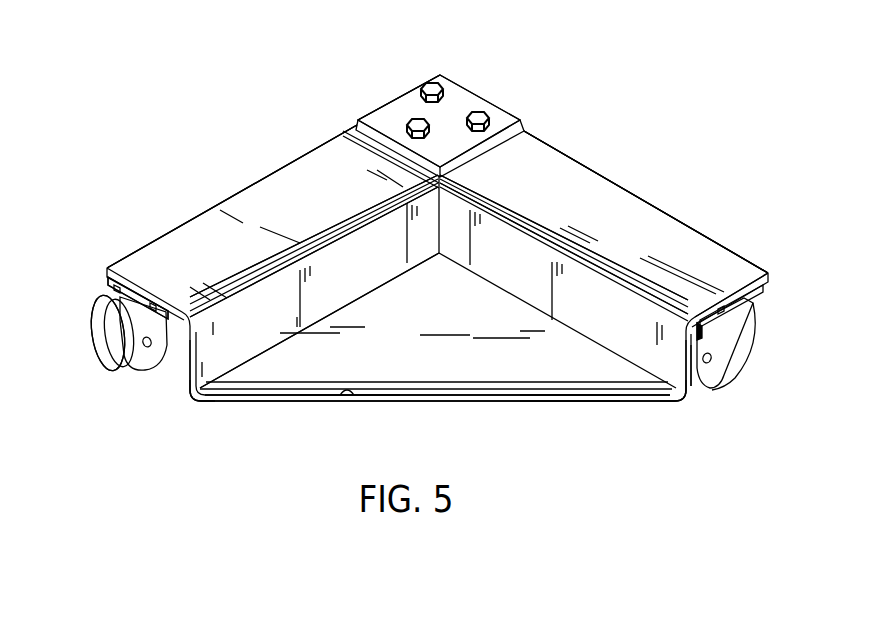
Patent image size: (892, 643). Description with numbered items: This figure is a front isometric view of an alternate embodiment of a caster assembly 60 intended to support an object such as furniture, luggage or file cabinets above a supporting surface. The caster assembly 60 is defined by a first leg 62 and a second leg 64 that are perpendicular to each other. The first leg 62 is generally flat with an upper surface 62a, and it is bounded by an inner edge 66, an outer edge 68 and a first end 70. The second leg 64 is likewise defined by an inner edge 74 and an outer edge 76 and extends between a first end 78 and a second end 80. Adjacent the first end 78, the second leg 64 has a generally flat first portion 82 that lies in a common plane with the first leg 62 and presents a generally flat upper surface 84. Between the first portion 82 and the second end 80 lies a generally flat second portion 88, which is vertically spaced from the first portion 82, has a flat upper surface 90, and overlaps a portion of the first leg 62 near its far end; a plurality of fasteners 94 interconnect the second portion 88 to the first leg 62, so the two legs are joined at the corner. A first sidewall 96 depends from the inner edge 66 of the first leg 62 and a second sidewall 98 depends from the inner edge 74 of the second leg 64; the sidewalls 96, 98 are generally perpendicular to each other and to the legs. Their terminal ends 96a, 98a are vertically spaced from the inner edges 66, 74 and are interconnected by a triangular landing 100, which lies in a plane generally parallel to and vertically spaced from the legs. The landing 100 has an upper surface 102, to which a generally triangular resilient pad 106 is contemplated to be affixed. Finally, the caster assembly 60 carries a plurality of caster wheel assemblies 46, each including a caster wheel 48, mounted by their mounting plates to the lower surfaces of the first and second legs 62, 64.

The caster wheel assembly 46 is at (99, 311).
The caster wheel 48 is at (98, 335).
The caster assembly 60 is at (153, 430).
The first leg 62 is at (207, 209).
The upper surface 62a is at (332, 207).
The second leg 64 is at (601, 173).
The inner edge 66 is at (230, 292).
The outer edge 68 is at (165, 238).
The first end 70 is at (108, 282).
The inner edge 74 is at (592, 258).
The outer edge 76 is at (652, 208).
The first end 78 is at (757, 284).
The second end 80 is at (407, 92).
The first portion 82 is at (688, 223).
The upper surface 84 is at (626, 243).
The second portion 88 is at (467, 82).
The upper surface 90 is at (436, 133).
The fasteners 94 is at (432, 83).
The first sidewall 96 is at (188, 350).
The terminal end 96a is at (190, 406).
The second sidewall 98 is at (690, 378).
The terminal end 98a is at (688, 407).
The triangular landing 100 is at (282, 406).
The upper surface 102 is at (350, 397).
The resilient pad 106 is at (565, 398).